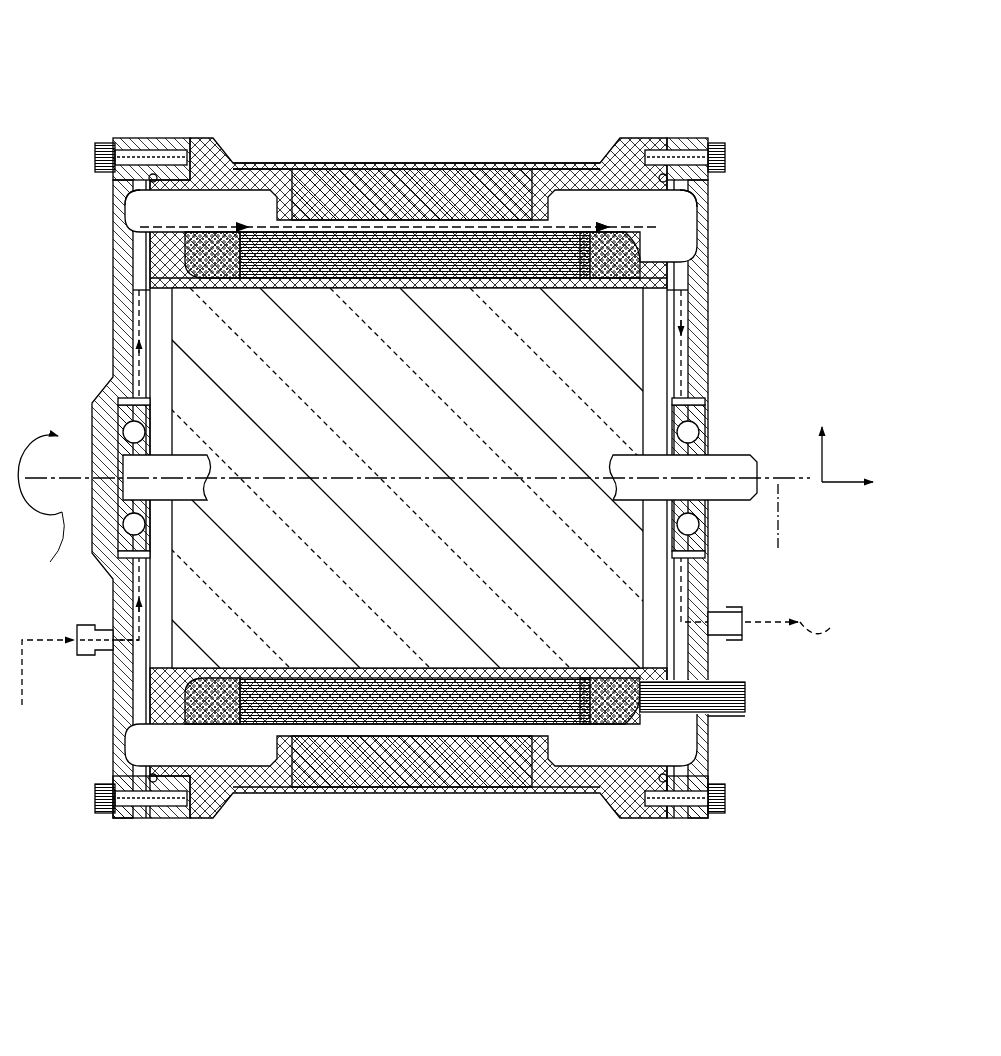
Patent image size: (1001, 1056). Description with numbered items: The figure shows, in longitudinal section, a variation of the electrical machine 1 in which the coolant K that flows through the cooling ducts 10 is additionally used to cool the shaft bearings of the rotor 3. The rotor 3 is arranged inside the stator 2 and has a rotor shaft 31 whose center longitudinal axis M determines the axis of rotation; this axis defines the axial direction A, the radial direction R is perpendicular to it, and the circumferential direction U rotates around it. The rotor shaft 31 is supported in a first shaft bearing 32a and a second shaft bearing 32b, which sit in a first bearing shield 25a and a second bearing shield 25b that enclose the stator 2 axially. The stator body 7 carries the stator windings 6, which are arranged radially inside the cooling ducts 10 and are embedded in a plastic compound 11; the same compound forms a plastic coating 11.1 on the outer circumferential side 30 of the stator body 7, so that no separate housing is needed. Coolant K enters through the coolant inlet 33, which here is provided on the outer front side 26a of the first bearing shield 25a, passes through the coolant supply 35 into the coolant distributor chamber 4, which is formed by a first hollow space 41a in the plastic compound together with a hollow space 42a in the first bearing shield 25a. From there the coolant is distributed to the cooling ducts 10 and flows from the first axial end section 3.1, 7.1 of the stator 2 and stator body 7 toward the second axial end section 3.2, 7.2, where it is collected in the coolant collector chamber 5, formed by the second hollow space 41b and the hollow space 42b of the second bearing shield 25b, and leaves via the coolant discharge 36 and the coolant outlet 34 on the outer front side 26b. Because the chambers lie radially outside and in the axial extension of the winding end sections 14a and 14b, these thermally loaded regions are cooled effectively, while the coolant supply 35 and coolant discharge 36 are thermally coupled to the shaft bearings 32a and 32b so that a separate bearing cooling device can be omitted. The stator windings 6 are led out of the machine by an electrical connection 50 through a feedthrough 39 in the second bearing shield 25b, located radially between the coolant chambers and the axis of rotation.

The electrical machine 1 is at (817, 130).
The stator 2 is at (502, 456).
The rotor 3 is at (391, 443).
The first axial end section of the stator 3.1 is at (188, 148).
The second axial end section of the stator 3.2 is at (628, 150).
The coolant distributor chamber 4 is at (173, 218).
The coolant collector chamber 5 is at (633, 218).
The stator winding 6 is at (473, 291).
The stator body 7 is at (401, 161).
The first axial end section of the stator body 7.1 is at (300, 178).
The second axial end section of the stator body 7.2 is at (522, 178).
The cooling duct 10 is at (322, 218).
The plastic compound 11 is at (548, 156).
The plastic coating 11.1 is at (462, 162).
The first axial end section of the stator winding 14a is at (148, 234).
The second axial end section of the stator winding 14b is at (688, 234).
The first bearing shield 25a is at (110, 322).
The second bearing shield 25b is at (712, 322).
The outer front side of the first bearing shield 26a is at (110, 358).
The outer front side of the second bearing shield 26b is at (710, 358).
The outer circumferential side of the stator body 30 is at (372, 163).
The rotor shaft 31 is at (722, 492).
The first shaft bearing 32a is at (118, 412).
The second shaft bearing 32b is at (706, 412).
The coolant inlet 33 is at (90, 656).
The coolant outlet 34 is at (727, 636).
The coolant supply 35 is at (140, 290).
The coolant discharge 36 is at (690, 290).
The feedthrough 39 is at (720, 714).
The first hollow space 41a is at (242, 188).
The second hollow space 41b is at (585, 203).
The hollow space in the first bearing shield 42a is at (135, 214).
The hollow space in the second bearing shield 42b is at (690, 214).
The electrical connection 50 is at (748, 697).
The coolant K is at (431, 676).
The circumferential direction U is at (41, 517).
The radial direction R is at (827, 454).
The axial direction A is at (832, 486).
The center longitudinal axis of the rotor shaft M is at (790, 531).